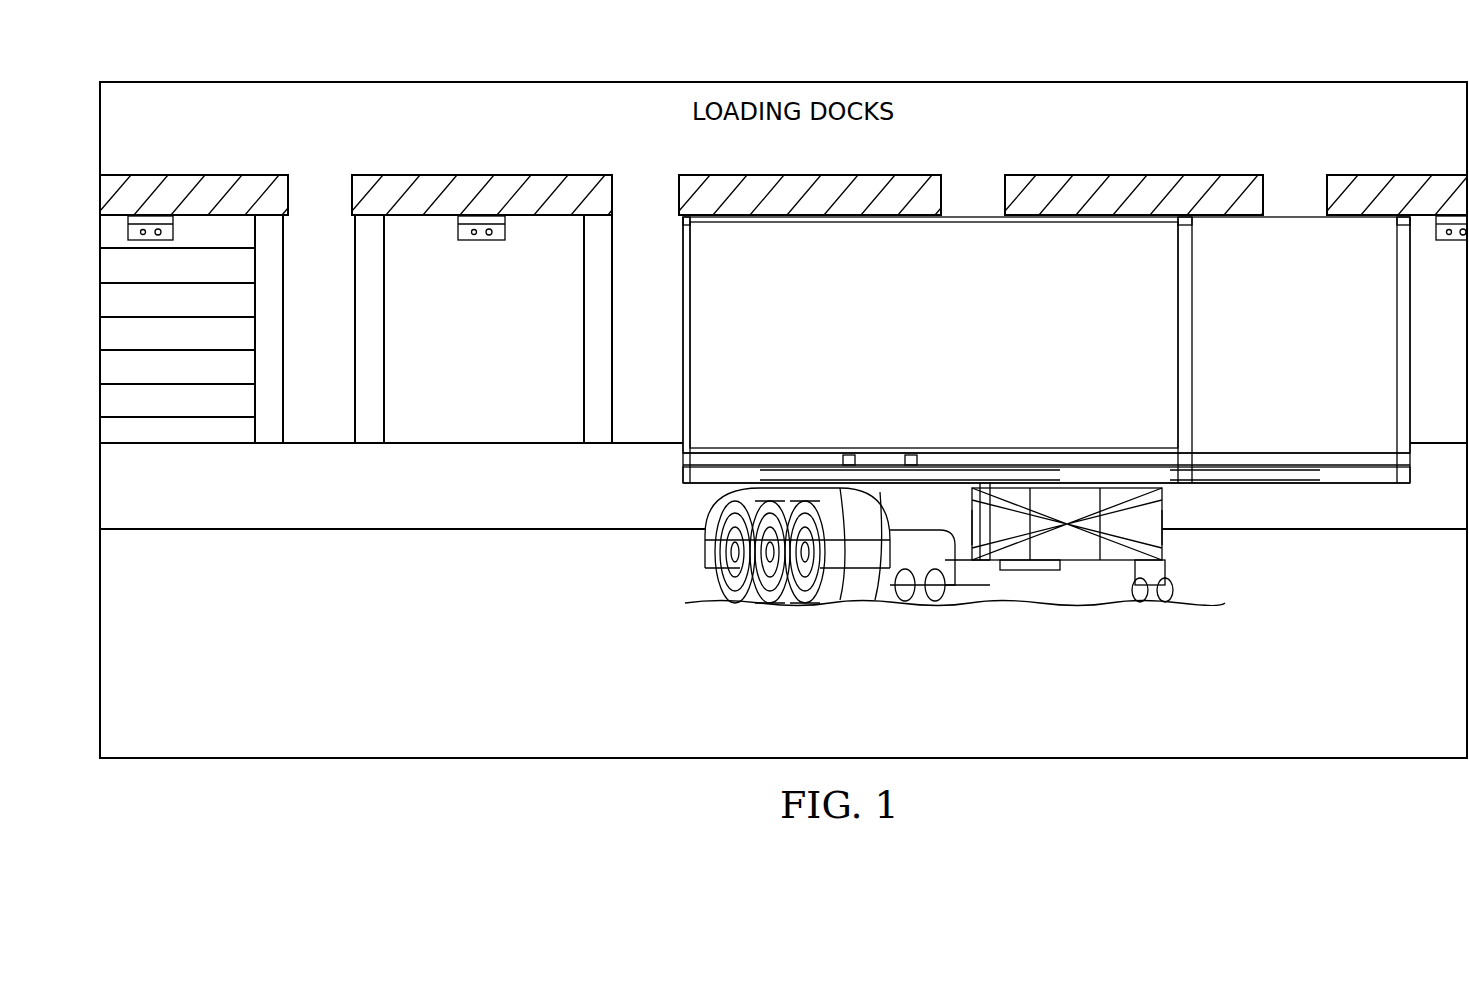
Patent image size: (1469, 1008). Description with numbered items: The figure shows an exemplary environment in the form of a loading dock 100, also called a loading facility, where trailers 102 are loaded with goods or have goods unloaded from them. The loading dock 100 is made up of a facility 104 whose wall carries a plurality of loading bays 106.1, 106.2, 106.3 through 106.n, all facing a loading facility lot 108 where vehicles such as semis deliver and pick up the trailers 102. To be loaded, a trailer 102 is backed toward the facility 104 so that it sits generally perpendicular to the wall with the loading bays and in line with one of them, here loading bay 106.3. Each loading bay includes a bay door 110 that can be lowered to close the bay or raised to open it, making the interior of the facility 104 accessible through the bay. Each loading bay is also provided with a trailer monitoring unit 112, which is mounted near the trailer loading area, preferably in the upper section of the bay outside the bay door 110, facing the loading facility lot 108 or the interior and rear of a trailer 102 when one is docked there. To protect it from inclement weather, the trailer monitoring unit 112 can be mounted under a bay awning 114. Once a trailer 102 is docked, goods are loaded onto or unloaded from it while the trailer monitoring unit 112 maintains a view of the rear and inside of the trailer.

The loading dock 100 is at (175, 45).
The trailer 102 is at (1352, 460).
The facility 104 is at (1047, 97).
The loading bay 106.1 is at (272, 170).
The loading bay 106.2 is at (600, 170).
The loading bay 106.3 is at (918, 170).
The loading bay 106.n is at (1343, 165).
The loading facility lot 108 is at (518, 645).
The bay door 110 is at (190, 420).
The trailer monitoring unit 112 is at (151, 225).
The bay awning 114 is at (140, 190).